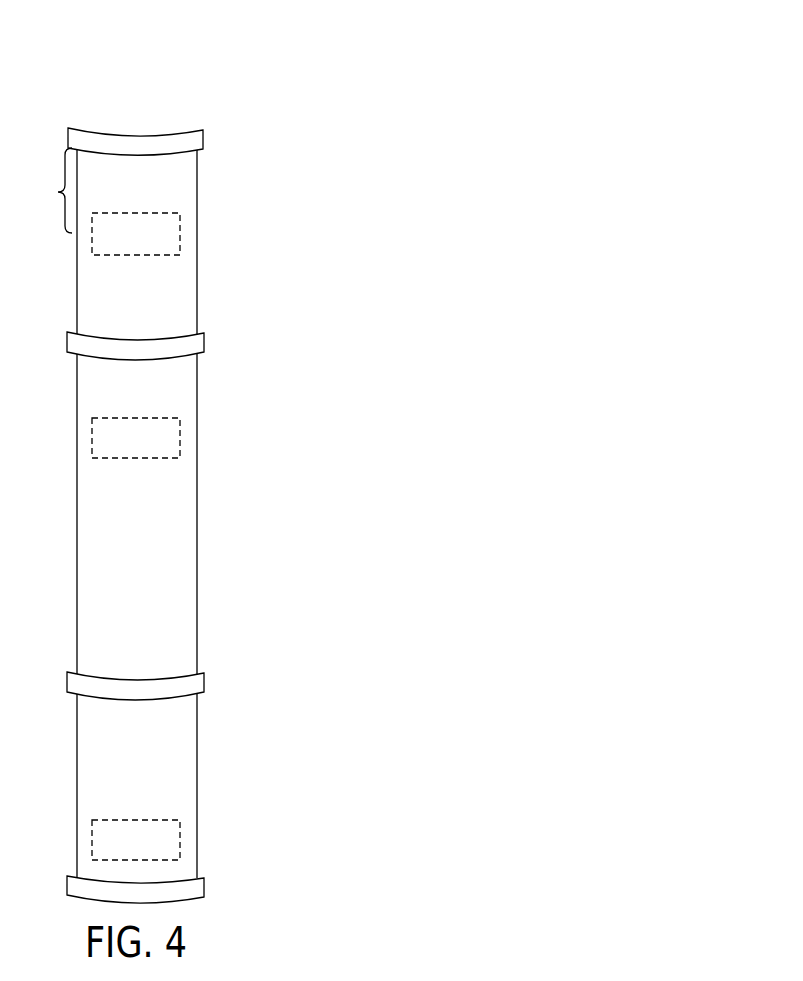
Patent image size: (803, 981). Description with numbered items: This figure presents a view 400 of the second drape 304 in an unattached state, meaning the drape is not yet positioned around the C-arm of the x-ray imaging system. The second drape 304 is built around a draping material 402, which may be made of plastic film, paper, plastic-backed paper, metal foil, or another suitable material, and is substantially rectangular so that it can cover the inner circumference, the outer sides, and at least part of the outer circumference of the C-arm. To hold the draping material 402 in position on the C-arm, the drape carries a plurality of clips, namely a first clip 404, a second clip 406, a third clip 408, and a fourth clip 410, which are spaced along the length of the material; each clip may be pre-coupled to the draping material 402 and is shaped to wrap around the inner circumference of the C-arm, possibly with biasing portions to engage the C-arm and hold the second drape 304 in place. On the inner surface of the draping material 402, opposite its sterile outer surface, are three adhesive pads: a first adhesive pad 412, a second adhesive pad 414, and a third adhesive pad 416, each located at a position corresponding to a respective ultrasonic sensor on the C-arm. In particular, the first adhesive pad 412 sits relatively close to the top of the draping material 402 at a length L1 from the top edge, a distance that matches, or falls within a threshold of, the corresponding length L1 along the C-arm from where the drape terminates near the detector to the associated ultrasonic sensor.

The view 400 is at (389, 40).
The second drape 304 is at (211, 91).
The draping material 402 is at (198, 178).
The first clip 404 is at (203, 137).
The second clip 406 is at (203, 333).
The third clip 408 is at (203, 673).
The fourth clip 410 is at (203, 878).
The first adhesive pad 412 is at (136, 234).
The second adhesive pad 414 is at (136, 438).
The third adhesive pad 416 is at (136, 840).
The length L1 is at (54, 190).